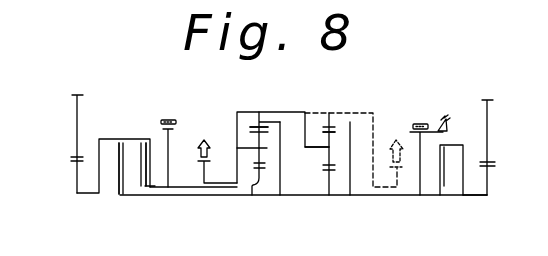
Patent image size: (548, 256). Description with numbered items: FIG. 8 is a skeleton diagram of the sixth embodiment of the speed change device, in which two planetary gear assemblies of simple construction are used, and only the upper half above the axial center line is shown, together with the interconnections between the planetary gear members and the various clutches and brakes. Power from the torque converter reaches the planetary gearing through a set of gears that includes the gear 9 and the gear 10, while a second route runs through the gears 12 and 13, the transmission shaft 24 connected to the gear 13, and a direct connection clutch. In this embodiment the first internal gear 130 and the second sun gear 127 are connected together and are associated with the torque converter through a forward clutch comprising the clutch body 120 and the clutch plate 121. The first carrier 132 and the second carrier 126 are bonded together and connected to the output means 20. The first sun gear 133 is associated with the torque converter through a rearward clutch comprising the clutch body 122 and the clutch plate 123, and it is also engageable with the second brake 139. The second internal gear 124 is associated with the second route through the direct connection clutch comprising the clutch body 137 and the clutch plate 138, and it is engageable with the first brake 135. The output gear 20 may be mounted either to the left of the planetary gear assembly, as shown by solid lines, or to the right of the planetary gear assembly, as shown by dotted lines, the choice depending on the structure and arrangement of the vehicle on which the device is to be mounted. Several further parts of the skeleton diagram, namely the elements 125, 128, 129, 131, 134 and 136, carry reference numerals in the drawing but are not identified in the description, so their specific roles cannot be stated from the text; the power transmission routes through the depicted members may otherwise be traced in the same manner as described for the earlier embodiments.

The gear 9 is at (77, 142).
The gear 10 is at (77, 174).
The gear 12 is at (488, 150).
The gear 13 is at (488, 180).
The output gear 20 is at (213, 184).
The transmission shaft 24 is at (475, 196).
The clutch body 120 is at (117, 176).
The clutch plate 121 is at (118, 193).
The clutch body 122 is at (142, 176).
The clutch plate 123 is at (152, 192).
The second internal gear 124 is at (330, 126).
The valve element 125 is at (334, 133).
The second carrier 126 is at (332, 146).
The second sun gear 127 is at (330, 189).
The frame 128 is at (270, 196).
The shaft 129 is at (187, 189).
The first internal gear 130 is at (254, 126).
The clutch half 131 is at (252, 133).
The first carrier 132 is at (252, 144).
The first sun gear 133 is at (252, 189).
The brush contact 134 is at (447, 118).
The first brake 135 is at (420, 123).
The alternative connection 136 is at (380, 198).
The clutch body 137 is at (449, 182).
The clutch plate 138 is at (441, 190).
The second brake 139 is at (167, 119).